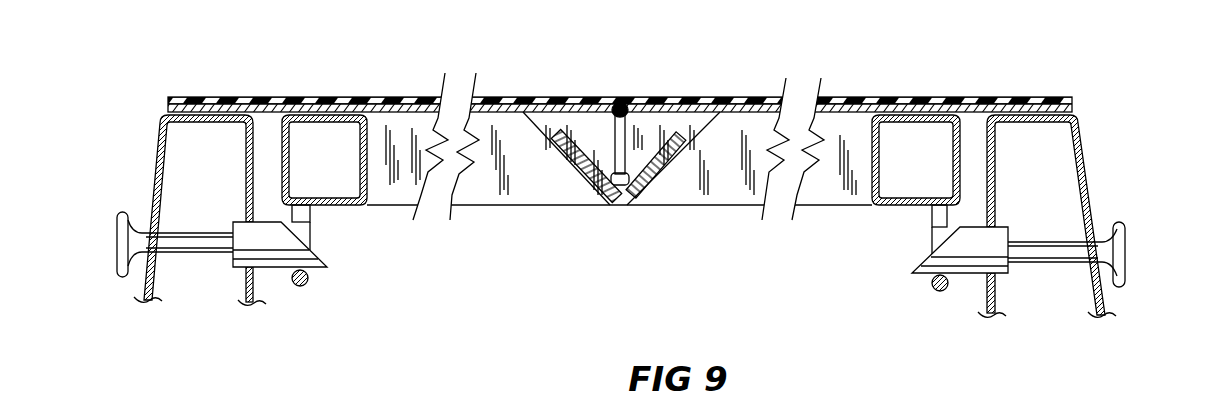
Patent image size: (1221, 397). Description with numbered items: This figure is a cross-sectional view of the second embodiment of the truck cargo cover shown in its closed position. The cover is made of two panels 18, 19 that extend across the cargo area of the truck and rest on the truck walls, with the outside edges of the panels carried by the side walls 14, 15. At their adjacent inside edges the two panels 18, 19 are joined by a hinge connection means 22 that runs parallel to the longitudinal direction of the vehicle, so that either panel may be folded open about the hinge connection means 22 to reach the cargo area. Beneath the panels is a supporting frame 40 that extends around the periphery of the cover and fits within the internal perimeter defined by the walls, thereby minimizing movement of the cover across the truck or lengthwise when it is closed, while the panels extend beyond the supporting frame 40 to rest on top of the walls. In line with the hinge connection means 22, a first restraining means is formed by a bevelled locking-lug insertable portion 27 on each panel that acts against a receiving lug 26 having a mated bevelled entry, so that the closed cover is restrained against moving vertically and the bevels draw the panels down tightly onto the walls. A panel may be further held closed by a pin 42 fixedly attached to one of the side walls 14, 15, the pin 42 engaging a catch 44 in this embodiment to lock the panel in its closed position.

The side wall 14 is at (1033, 160).
The side wall 15 is at (199, 177).
The panel 18 is at (850, 108).
The panel 19 is at (287, 103).
The hinge connection means 22 is at (625, 107).
The receiving lug 26 is at (600, 198).
The locking-lug insertable portion 27 is at (675, 200).
The supporting frame 40 is at (913, 165).
The pin 42 is at (1128, 252).
The catch 44 is at (934, 293).